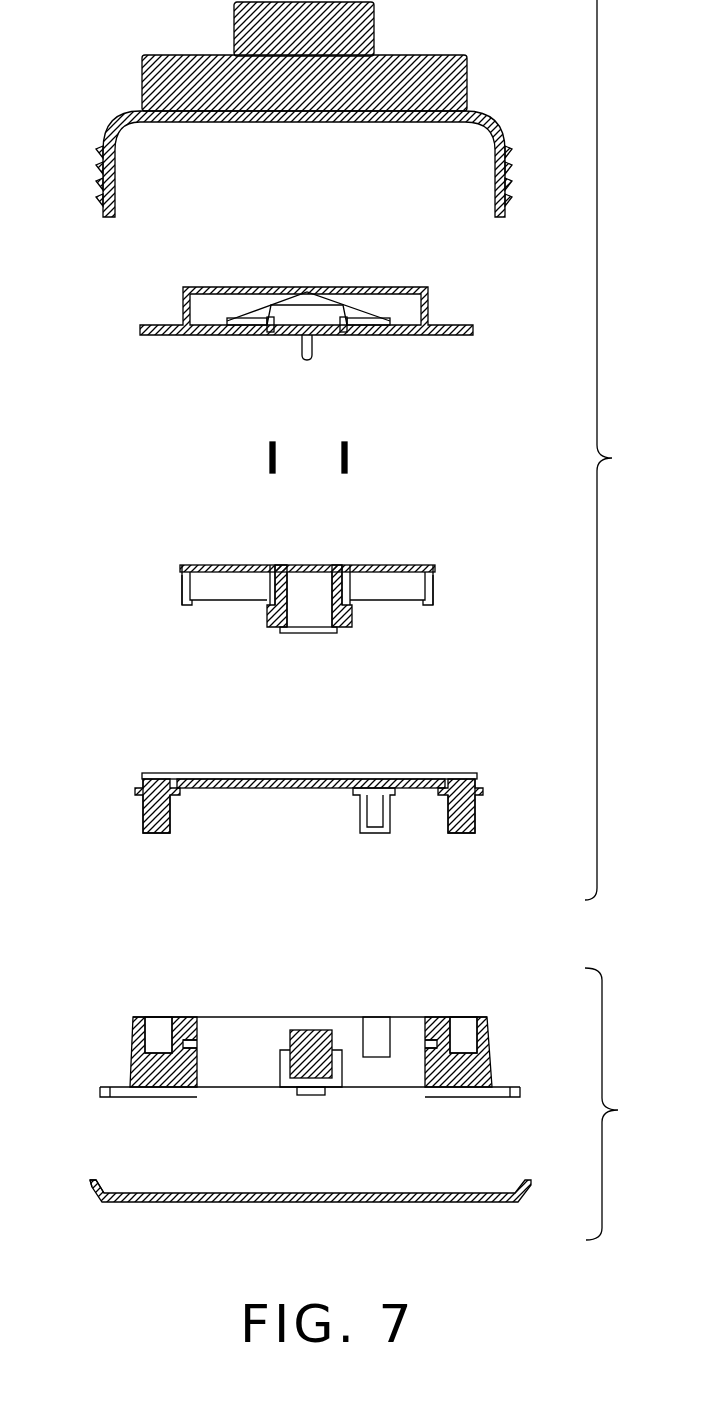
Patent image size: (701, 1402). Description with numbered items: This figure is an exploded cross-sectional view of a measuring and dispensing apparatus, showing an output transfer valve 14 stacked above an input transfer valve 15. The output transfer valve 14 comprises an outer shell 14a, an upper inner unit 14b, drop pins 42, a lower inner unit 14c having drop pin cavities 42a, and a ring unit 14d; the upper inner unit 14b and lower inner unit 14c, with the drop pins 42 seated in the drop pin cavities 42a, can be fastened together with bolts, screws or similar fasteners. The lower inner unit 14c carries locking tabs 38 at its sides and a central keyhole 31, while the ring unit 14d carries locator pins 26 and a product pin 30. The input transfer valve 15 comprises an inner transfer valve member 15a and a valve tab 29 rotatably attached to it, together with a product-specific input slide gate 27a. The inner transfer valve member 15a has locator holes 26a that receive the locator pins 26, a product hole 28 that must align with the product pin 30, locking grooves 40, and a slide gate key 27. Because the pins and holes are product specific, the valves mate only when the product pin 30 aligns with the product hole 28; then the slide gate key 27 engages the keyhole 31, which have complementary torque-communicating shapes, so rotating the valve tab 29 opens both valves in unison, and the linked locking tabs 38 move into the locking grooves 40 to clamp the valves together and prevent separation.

The output transfer valve 14 is at (619, 450).
The outer shell 14a is at (422, 56).
The upper inner unit 14b is at (312, 290).
The lower inner unit 14c is at (170, 584).
The ring unit 14d is at (116, 777).
The input transfer valve 15 is at (623, 1104).
The inner transfer valve member 15a is at (135, 1055).
The locator pin 26 is at (468, 834).
The locator hole 26a is at (465, 1027).
The slide gate key 27 is at (297, 1065).
The input slide gate 27a is at (290, 1203).
The product hole 28 is at (375, 1028).
The valve tab 29 is at (90, 1188).
The product pin 30 is at (375, 830).
The keyhole 31 is at (305, 618).
The locking tab 38 is at (418, 640).
The locking groove 40 is at (428, 1042).
The drop pin 42 is at (276, 450).
The drop pin cavity 42a is at (270, 565).